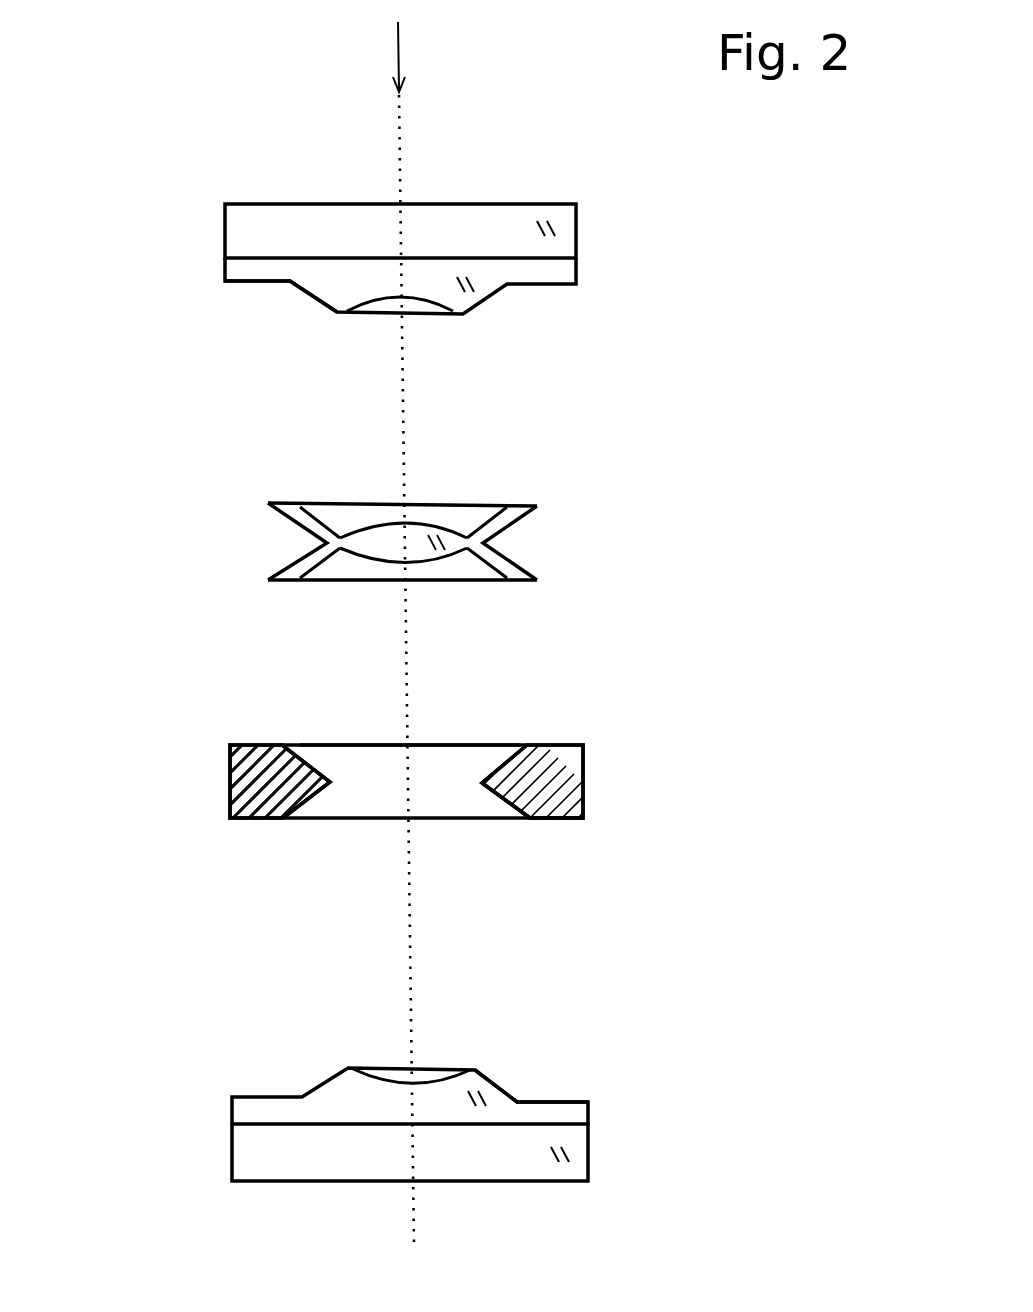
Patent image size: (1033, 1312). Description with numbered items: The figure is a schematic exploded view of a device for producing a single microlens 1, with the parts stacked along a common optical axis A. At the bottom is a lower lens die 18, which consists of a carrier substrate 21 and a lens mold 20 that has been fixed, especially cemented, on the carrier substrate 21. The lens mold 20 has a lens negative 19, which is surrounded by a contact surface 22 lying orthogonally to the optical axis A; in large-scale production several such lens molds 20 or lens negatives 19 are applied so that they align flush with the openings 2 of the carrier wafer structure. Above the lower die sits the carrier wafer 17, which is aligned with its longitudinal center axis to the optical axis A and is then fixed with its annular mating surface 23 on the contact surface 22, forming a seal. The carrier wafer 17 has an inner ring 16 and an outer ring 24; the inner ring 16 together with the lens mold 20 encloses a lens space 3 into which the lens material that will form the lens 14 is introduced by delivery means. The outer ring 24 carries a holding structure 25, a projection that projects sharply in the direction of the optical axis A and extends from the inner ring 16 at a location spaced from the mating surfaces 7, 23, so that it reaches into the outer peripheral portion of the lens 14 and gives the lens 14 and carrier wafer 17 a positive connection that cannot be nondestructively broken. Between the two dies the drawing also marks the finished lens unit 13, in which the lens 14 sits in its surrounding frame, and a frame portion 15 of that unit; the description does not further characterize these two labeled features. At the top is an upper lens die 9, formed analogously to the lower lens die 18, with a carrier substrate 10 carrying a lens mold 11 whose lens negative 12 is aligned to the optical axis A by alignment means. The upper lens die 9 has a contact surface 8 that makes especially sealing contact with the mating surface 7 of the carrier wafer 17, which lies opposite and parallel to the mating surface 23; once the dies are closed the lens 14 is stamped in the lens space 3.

The microlens 1 is at (201, 675).
The opening 2 is at (370, 795).
The lens space 3 is at (440, 752).
The mating surface 7 is at (558, 748).
The contact surface 8 is at (247, 282).
The upper lens die 9 is at (397, 178).
The carrier substrate 10 is at (510, 204).
The lens mold 11 is at (577, 277).
The lens negative 12 is at (478, 303).
The middle lens unit 13 is at (401, 517).
The lens 14 is at (423, 523).
The lens frame 15 is at (535, 581).
The inner ring 16 is at (502, 797).
The carrier wafer 17 is at (392, 781).
The lower lens die 18 is at (408, 1115).
The lens negative 19 is at (431, 1082).
The lens mold 20 is at (588, 1113).
The carrier substrate 21 is at (550, 1183).
The contact surface 22 is at (547, 1101).
The mating surface 23 is at (560, 821).
The outer ring 24 is at (230, 785).
The holding structure 25 is at (315, 766).
The optical axis A is at (413, 1197).